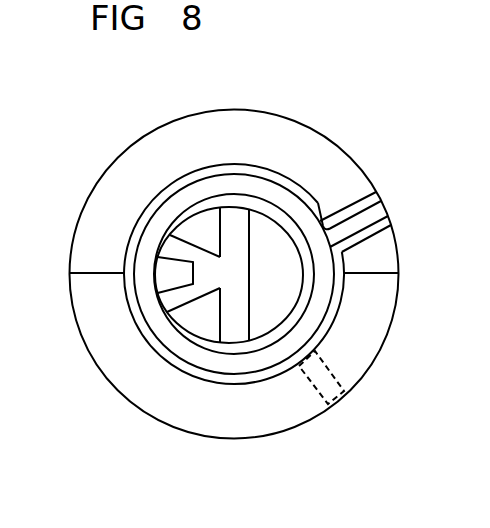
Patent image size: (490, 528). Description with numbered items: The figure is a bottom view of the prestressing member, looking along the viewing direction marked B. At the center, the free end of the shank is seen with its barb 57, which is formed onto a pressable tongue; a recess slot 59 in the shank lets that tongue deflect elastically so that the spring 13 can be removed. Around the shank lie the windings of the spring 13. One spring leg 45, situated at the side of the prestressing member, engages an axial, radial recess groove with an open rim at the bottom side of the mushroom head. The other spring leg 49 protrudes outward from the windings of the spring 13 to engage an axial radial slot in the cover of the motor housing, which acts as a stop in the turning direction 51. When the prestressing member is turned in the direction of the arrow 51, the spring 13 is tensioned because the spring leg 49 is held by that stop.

The spring 13 is at (203, 187).
The spring leg 45 is at (357, 225).
The spring leg 49 is at (326, 375).
The turning direction 51 is at (212, 480).
The barb 57 is at (168, 278).
The recess slot 59 is at (205, 284).
The viewing direction B is at (372, 150).